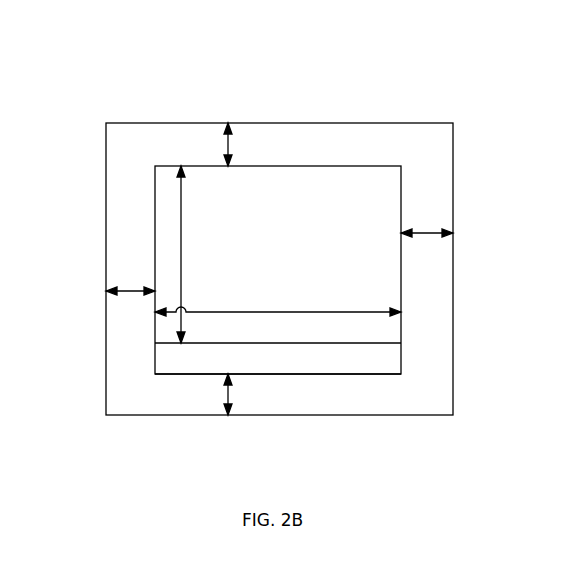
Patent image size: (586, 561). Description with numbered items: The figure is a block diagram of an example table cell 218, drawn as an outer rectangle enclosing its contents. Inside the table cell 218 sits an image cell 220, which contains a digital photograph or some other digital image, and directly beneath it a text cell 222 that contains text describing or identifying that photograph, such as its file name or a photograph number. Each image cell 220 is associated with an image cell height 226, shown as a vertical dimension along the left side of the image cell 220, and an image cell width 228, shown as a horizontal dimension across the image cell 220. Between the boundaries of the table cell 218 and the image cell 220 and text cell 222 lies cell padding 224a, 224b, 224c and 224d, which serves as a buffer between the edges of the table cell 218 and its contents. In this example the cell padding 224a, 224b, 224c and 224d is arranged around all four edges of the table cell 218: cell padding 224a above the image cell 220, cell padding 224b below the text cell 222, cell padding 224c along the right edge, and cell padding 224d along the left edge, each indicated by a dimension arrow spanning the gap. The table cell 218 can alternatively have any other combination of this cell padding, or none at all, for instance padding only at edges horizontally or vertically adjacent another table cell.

The table cell 218 is at (254, 251).
The image cell 220 is at (331, 252).
The text cell 222 is at (331, 349).
The cell padding 224a is at (252, 144).
The cell padding 224b is at (252, 394).
The cell padding 224c is at (427, 246).
The cell padding 224d is at (130, 303).
The image cell height 226 is at (200, 254).
The image cell width 228 is at (278, 302).